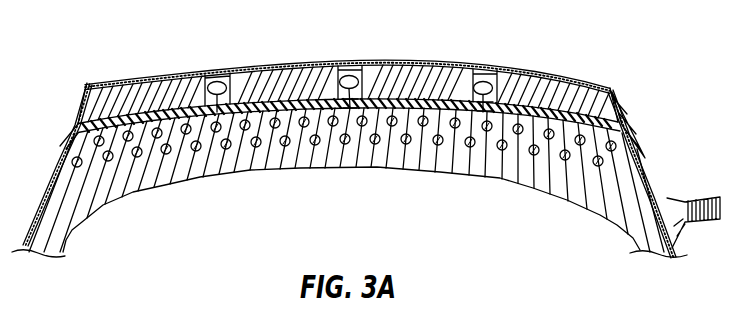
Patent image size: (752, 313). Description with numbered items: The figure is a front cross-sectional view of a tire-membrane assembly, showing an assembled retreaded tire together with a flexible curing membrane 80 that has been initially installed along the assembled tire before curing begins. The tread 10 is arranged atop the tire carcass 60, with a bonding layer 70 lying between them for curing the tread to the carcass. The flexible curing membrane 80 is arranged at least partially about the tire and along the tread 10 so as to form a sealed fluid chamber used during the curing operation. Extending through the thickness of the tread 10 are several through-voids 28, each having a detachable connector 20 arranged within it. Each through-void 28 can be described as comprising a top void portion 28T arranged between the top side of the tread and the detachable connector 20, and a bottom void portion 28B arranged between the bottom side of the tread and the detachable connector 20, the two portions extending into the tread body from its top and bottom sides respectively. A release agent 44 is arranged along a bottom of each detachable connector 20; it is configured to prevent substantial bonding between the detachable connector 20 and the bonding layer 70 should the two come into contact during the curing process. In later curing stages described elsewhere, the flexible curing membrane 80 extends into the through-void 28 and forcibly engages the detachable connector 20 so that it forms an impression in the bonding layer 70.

The tread 10 is at (525, 80).
The detachable connector 20 is at (229, 71).
The through-void 28 is at (213, 81).
The top void portion 28T is at (343, 76).
The bottom void portion 28B is at (352, 105).
The release agent 44 is at (347, 102).
The tire carcass 60 is at (637, 176).
The bonding layer 70 is at (618, 100).
The flexible curing membrane 80 is at (580, 76).